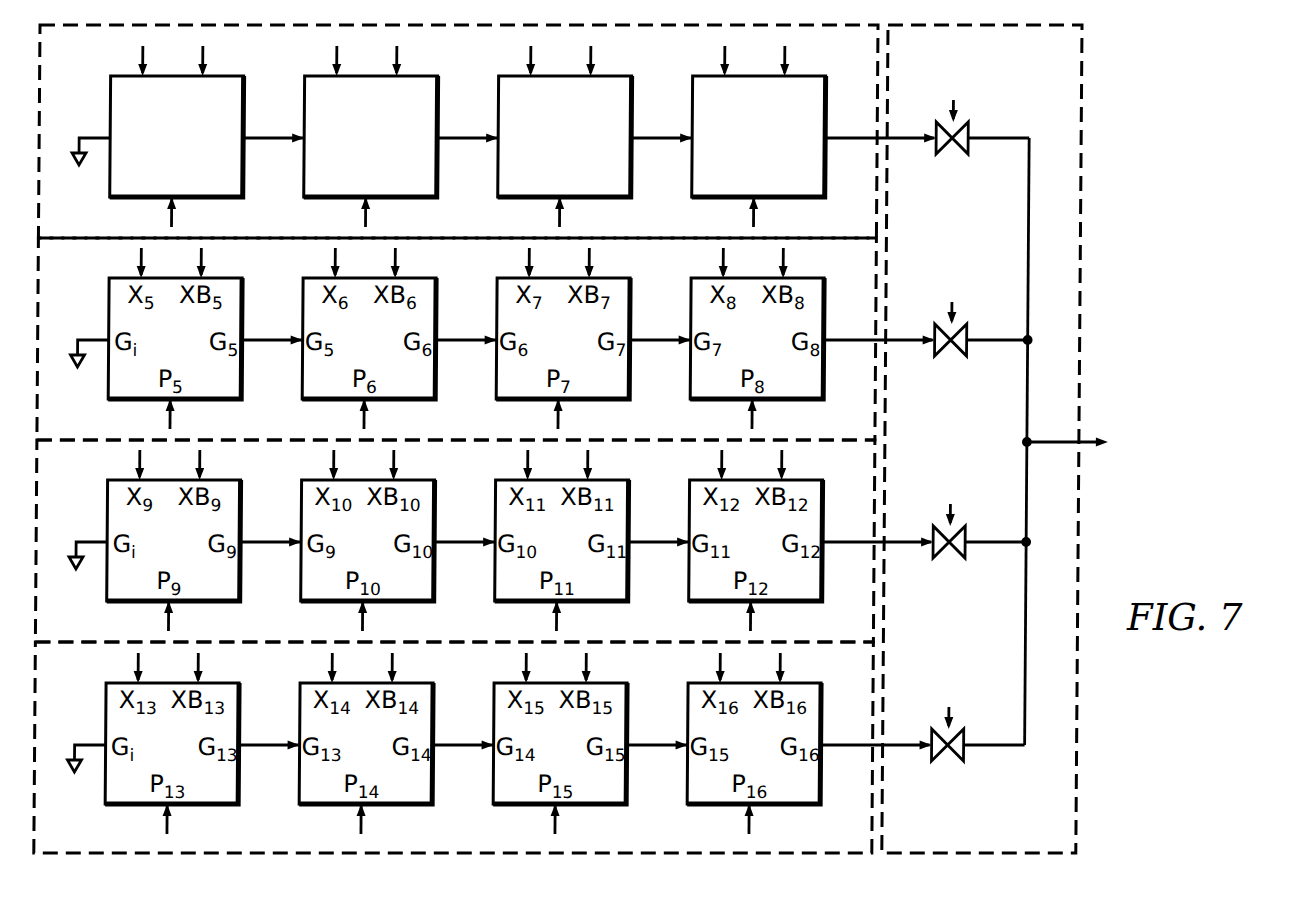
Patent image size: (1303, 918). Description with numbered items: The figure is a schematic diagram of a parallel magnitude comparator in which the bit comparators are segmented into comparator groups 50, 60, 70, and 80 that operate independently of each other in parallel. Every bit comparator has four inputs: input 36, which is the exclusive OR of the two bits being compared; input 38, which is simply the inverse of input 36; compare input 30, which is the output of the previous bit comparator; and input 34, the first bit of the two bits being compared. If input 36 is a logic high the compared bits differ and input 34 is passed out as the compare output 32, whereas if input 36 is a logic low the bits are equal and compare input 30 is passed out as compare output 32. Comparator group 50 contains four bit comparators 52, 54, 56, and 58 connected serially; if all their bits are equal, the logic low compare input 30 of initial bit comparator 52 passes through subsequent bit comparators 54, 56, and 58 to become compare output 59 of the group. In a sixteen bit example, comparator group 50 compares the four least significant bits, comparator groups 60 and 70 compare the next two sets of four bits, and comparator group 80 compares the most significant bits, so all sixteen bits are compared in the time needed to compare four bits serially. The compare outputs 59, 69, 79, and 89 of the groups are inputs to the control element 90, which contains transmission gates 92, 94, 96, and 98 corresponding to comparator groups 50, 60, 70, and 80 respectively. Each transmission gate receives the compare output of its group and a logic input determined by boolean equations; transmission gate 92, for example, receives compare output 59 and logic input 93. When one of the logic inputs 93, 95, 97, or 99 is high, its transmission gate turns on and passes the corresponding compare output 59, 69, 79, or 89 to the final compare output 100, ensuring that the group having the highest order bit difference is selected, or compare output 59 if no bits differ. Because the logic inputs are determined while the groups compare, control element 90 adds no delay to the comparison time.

The compare input 30 is at (379, 431).
The compare output 32 is at (465, 465).
The input 34 is at (436, 519).
The input 36 is at (407, 362).
The input 38 is at (515, 362).
The comparator group 50 is at (57, 226).
The bit comparator 52 is at (177, 136).
The bit comparator 54 is at (371, 136).
The bit comparator 56 is at (565, 136).
The bit comparator 58 is at (759, 136).
The compare output 59 is at (880, 159).
The comparator group 60 is at (57, 427).
The compare output 69 is at (878, 361).
The comparator group 70 is at (57, 631).
The compare output 79 is at (877, 563).
The comparator group 80 is at (57, 844).
The compare output 89 is at (875, 766).
The control element 90 is at (966, 846).
The transmission gate 92 is at (982, 126).
The logic input 93 is at (930, 99).
The transmission gate 94 is at (981, 328).
The logic input 95 is at (929, 301).
The transmission gate 96 is at (979, 530).
The logic input 97 is at (927, 503).
The transmission gate 98 is at (977, 733).
The logic input 99 is at (926, 706).
The final compare output 100 is at (1032, 441).